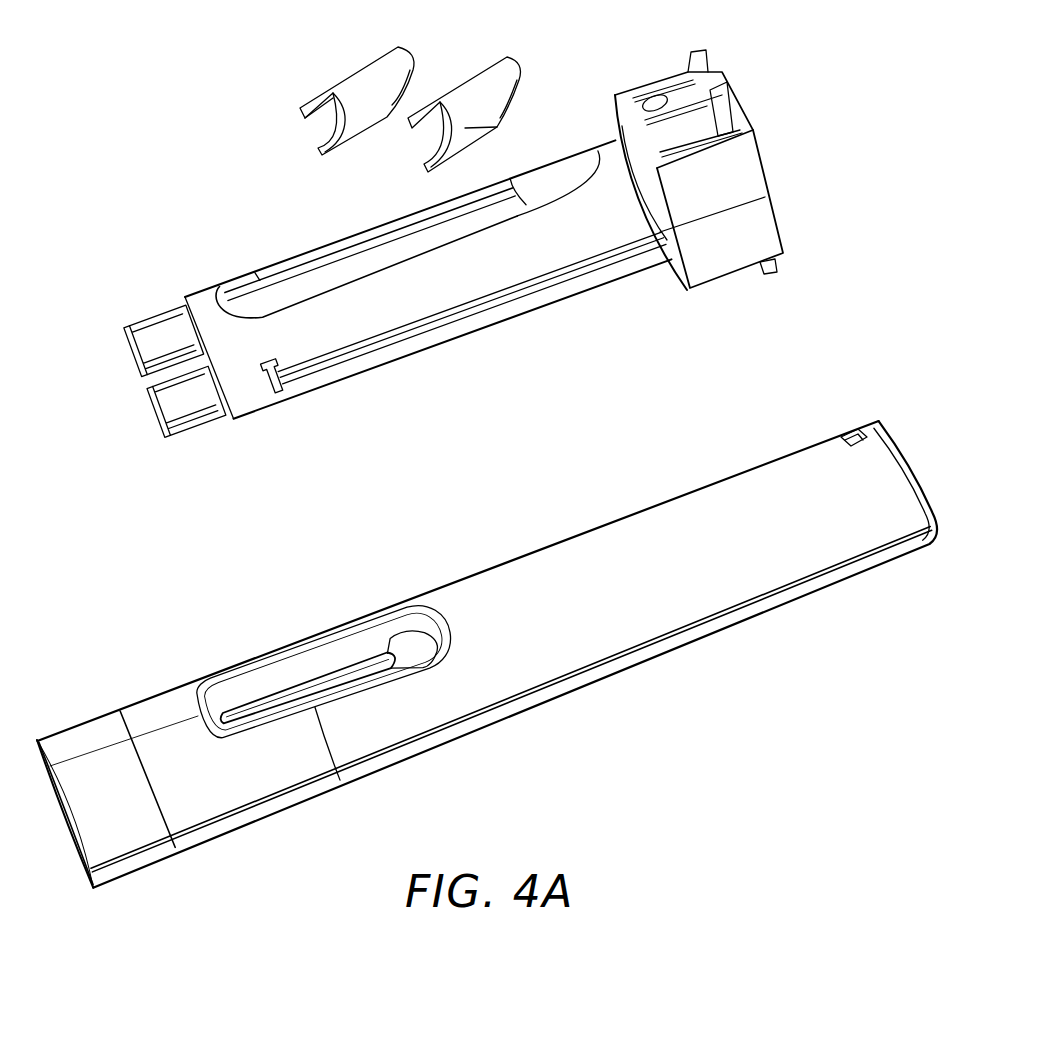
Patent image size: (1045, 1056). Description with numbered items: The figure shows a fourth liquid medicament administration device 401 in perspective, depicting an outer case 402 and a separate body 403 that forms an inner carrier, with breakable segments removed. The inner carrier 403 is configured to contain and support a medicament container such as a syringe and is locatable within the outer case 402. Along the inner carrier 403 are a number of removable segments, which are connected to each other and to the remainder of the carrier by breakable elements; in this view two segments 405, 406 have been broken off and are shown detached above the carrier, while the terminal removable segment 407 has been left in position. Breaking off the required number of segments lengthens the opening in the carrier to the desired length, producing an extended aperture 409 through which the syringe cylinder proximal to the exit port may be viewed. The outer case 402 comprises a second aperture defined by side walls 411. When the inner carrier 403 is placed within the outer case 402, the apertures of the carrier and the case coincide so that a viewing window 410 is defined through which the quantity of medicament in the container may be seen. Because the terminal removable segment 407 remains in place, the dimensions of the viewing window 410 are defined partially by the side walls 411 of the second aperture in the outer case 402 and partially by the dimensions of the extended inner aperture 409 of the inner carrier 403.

The housing assembly 401 is at (732, 633).
The outer case 402 is at (660, 510).
The body 403 is at (556, 300).
The removable segment 405 is at (377, 68).
The removable segment 406 is at (497, 68).
The terminal removable segment 407 is at (578, 165).
The extended aperture 409 is at (338, 274).
The viewing window 410 is at (347, 683).
The side walls 411 is at (263, 686).